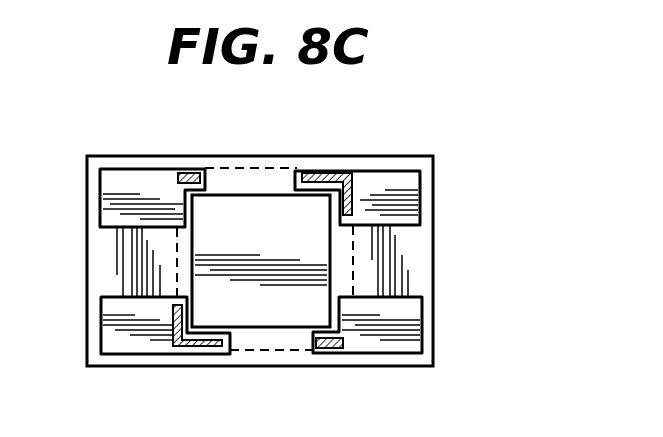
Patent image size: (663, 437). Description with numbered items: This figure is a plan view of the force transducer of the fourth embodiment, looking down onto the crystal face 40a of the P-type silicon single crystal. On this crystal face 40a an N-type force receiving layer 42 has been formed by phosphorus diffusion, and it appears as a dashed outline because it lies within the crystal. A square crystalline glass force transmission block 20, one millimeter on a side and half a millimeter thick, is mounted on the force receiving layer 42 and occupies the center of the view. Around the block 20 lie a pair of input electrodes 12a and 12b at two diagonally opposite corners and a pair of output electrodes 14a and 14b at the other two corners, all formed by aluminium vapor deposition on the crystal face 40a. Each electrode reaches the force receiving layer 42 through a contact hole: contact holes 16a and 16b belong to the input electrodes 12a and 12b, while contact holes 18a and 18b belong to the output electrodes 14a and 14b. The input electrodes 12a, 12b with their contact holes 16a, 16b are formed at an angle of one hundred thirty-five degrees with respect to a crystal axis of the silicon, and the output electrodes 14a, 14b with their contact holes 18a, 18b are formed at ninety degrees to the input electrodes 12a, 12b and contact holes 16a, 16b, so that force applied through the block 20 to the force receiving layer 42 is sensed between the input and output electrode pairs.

The input electrode 12a is at (405, 183).
The input electrode 12b is at (132, 338).
The output electrode 14a is at (407, 315).
The output electrode 14b is at (130, 187).
The contact hole 16a is at (345, 175).
The contact hole 16b is at (207, 343).
The contact hole 18a is at (328, 346).
The contact hole 18b is at (192, 172).
The force transmission block 20 is at (277, 205).
The crystal face 40a is at (407, 265).
The force receiving layer 42 is at (177, 258).